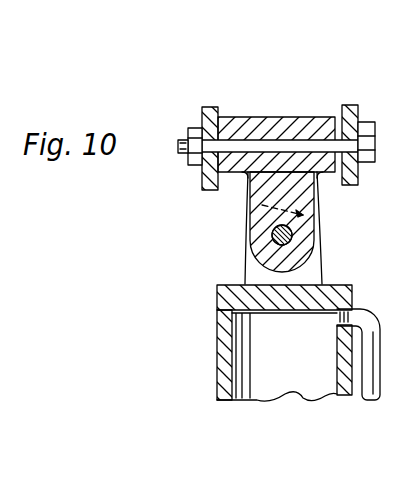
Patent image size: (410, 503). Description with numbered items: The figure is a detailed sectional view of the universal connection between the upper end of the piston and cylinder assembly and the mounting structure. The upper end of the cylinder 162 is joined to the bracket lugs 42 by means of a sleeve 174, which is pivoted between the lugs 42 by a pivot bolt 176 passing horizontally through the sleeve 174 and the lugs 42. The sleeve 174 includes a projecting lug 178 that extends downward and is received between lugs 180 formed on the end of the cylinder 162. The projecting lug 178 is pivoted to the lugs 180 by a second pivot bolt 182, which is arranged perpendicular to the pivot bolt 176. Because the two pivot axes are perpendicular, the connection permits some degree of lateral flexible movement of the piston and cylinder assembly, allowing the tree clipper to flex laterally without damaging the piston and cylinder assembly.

The bracket lugs 42 is at (351, 104).
The cylinder 162 is at (225, 356).
The sleeve 174 is at (275, 114).
The pivot bolt 176 is at (375, 150).
The projecting lug 178 is at (260, 204).
The lugs 180 is at (313, 270).
The pivot bolt 182 is at (272, 243).